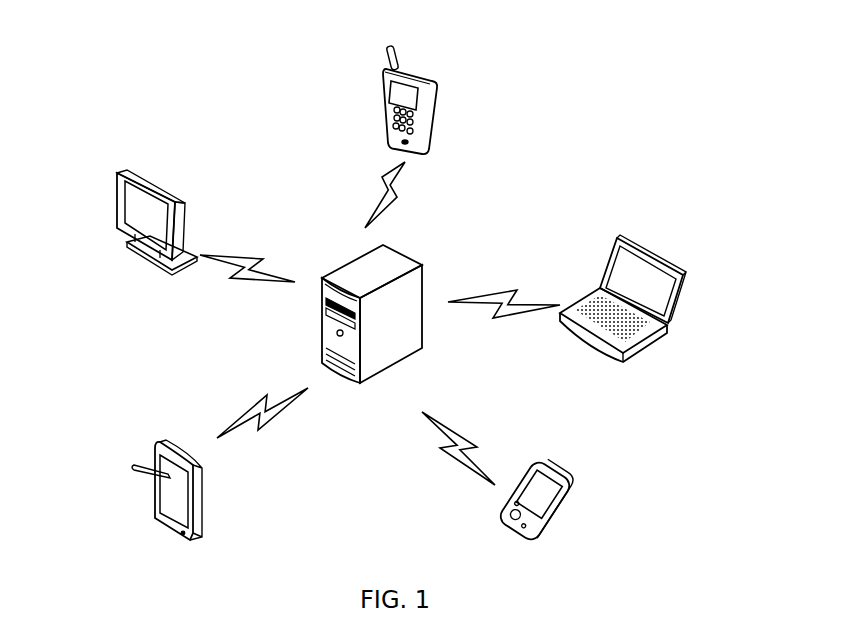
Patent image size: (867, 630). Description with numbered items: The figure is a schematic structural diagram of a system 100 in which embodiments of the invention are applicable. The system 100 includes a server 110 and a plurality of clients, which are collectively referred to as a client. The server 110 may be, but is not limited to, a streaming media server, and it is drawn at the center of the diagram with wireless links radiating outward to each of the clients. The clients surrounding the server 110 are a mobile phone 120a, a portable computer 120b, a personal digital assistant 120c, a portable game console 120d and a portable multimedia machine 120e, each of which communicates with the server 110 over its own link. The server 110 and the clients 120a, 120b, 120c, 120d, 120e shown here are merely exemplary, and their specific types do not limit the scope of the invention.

The system 100 is at (142, 92).
The server 110 is at (372, 334).
The mobile phone 120a is at (443, 99).
The portable computer 120b is at (649, 298).
The personal digital assistant (PDA) 120c is at (554, 498).
The portable game console 120d is at (143, 490).
The portable multimedia machine 120e is at (119, 222).